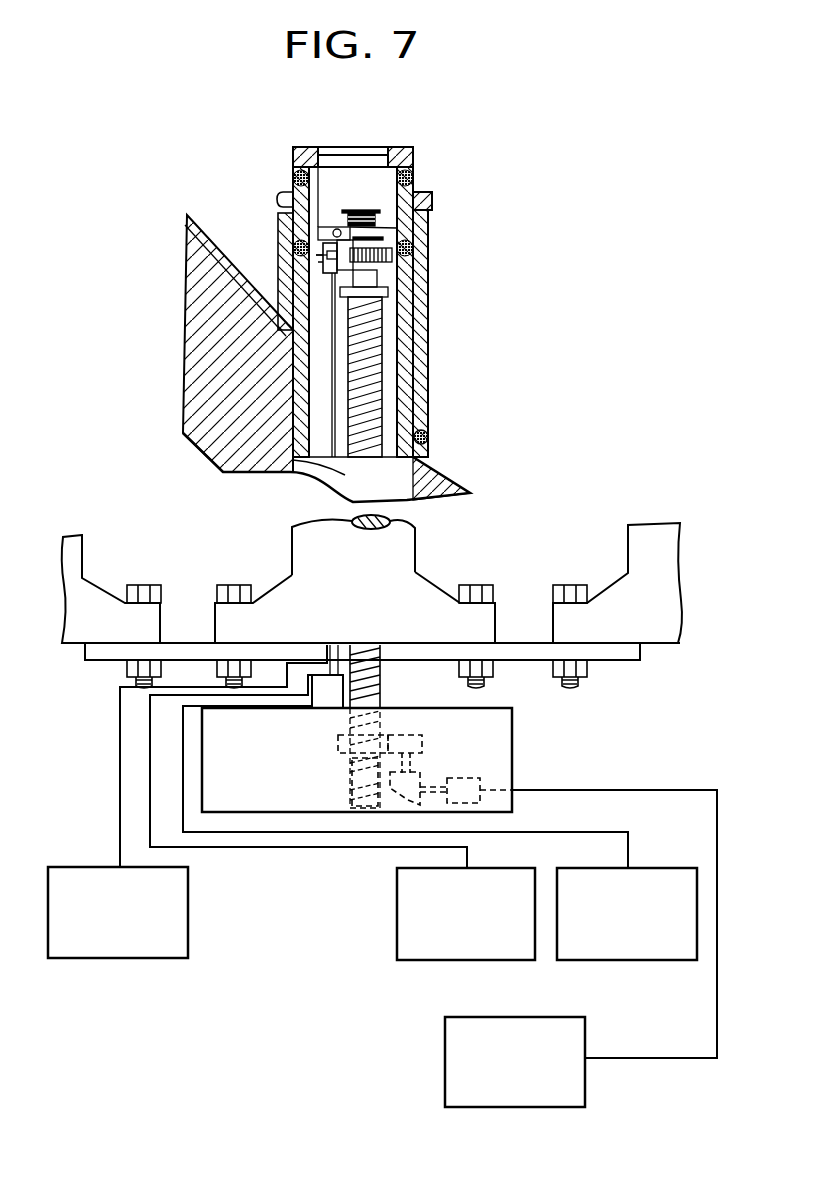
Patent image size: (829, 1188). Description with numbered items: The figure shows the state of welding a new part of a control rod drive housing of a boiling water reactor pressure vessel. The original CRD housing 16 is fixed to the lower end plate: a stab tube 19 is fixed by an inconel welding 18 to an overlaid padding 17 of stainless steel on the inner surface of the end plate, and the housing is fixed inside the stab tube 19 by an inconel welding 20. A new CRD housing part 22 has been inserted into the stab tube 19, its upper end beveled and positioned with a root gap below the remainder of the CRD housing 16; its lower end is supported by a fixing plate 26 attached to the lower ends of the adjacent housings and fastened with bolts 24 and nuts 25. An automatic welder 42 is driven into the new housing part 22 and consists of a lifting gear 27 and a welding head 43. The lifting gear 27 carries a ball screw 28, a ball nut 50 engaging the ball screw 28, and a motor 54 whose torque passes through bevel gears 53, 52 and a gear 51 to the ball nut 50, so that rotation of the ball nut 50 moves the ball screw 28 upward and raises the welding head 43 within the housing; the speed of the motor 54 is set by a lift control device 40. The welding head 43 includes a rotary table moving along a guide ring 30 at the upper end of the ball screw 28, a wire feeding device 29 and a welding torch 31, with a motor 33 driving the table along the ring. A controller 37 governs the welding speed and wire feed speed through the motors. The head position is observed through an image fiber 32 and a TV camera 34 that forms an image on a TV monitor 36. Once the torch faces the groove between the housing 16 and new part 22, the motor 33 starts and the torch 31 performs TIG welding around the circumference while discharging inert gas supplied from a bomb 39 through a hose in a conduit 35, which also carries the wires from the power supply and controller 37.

The CRD housing 16 is at (413, 173).
The overlaid padding 17 is at (470, 484).
The inconel welding 18 is at (428, 440).
The stab tube 19 is at (428, 402).
The inconel welding 20 is at (420, 193).
The new CRD housing part 22 is at (407, 341).
The bolts 24 is at (495, 598).
The nuts 25 is at (488, 668).
The fixing plate 26 is at (625, 653).
The lifting gear 27 is at (503, 752).
The ball screw 28 is at (373, 396).
The wire feeding device 29 is at (353, 210).
The guide ring 30 is at (393, 256).
The welding torch 31 is at (325, 262).
The image fiber 32 is at (310, 433).
The motor 33 is at (395, 231).
The TV camera 34 is at (325, 697).
The conduit 35 is at (343, 453).
The TV monitor 36 is at (672, 960).
The controller 37 is at (512, 960).
The bomb 39 is at (162, 958).
The lift control device 40 is at (445, 1057).
The automatic welder 42 is at (414, 308).
The welding head 43 is at (312, 224).
The ball nut 50 is at (340, 740).
The gear 51 is at (412, 735).
The bevel gear 52 is at (355, 784).
The bevel gear 53 is at (417, 774).
The motor 54 is at (465, 777).